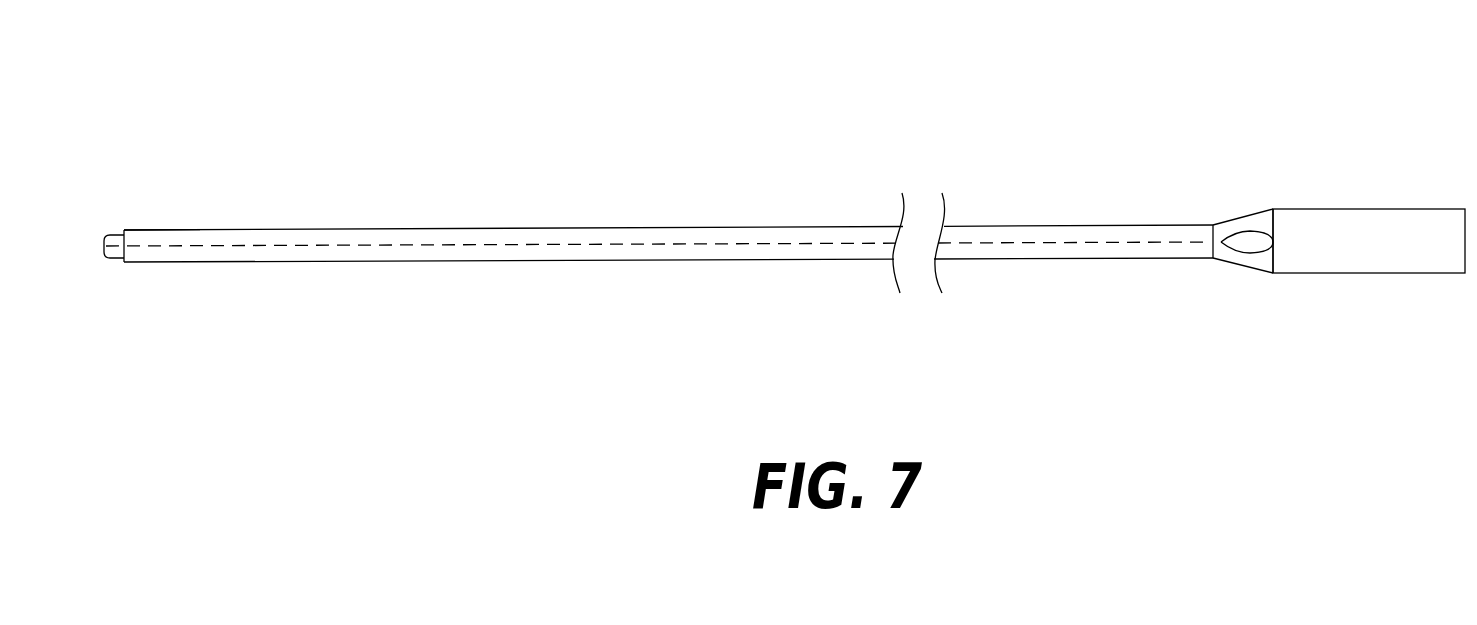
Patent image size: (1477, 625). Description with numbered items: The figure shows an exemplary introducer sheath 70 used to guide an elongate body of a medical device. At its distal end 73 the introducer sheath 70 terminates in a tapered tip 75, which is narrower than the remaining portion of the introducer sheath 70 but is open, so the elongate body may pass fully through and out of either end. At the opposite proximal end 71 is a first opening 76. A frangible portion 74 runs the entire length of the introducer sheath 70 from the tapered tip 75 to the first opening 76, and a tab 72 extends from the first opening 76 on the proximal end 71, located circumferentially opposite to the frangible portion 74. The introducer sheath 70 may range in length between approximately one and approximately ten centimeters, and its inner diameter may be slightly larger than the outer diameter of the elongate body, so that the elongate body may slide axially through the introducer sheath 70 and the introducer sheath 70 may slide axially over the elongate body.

The introducer sheath 70 is at (545, 146).
The proximal end 71 is at (1215, 274).
The tab 72 is at (1382, 208).
The distal end 73 is at (139, 213).
The frangible portion 74 is at (608, 243).
The tapered tip 75 is at (107, 260).
The first opening 76 is at (1235, 238).